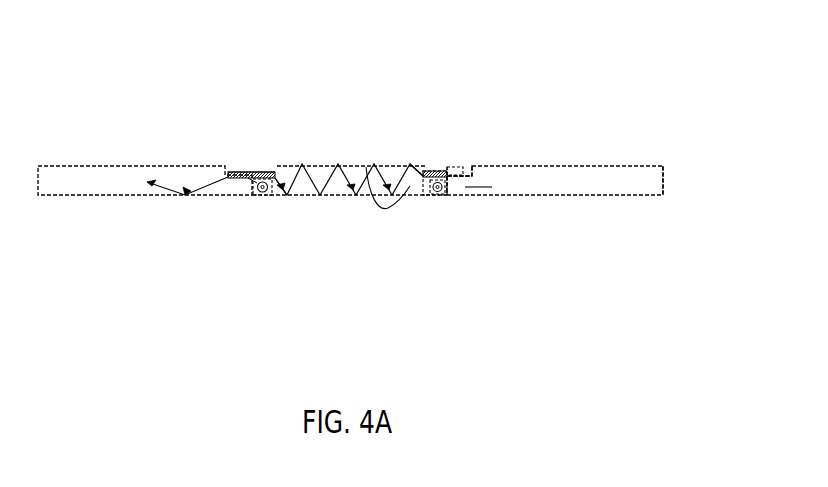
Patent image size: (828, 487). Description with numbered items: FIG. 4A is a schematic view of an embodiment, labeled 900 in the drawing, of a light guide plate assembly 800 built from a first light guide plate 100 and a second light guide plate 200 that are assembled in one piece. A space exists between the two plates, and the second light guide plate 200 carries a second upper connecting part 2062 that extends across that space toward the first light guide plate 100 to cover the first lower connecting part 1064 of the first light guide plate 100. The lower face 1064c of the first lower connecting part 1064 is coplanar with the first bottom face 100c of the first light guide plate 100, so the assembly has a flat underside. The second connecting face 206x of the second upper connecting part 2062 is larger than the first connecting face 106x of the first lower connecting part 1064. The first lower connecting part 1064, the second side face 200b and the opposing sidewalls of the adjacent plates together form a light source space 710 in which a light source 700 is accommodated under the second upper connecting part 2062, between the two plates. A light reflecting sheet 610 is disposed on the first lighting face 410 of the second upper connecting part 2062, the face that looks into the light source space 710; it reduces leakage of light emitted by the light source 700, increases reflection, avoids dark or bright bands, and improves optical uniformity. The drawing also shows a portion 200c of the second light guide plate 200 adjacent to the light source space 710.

The display device 900 is at (97, 33).
The first light guide plate 100 is at (105, 187).
The first bottom face 100c is at (617, 196).
The first lower connecting part 1064 is at (467, 187).
The lower face of the first lower connecting part 1064c is at (453, 197).
The first connecting face 106x is at (476, 166).
The second light guide plate 200 is at (351, 196).
The second side face 200b is at (272, 167).
The connecting portion of elastic member 200c is at (366, 167).
The second upper connecting part 2062 is at (237, 167).
The second connecting face 206x is at (468, 167).
The first lighting face 410 is at (251, 167).
The light reflecting sheet 610 is at (266, 167).
The light source 700 is at (459, 167).
The light source space 710 is at (429, 167).
The light guide plate assembly 800 is at (533, 267).